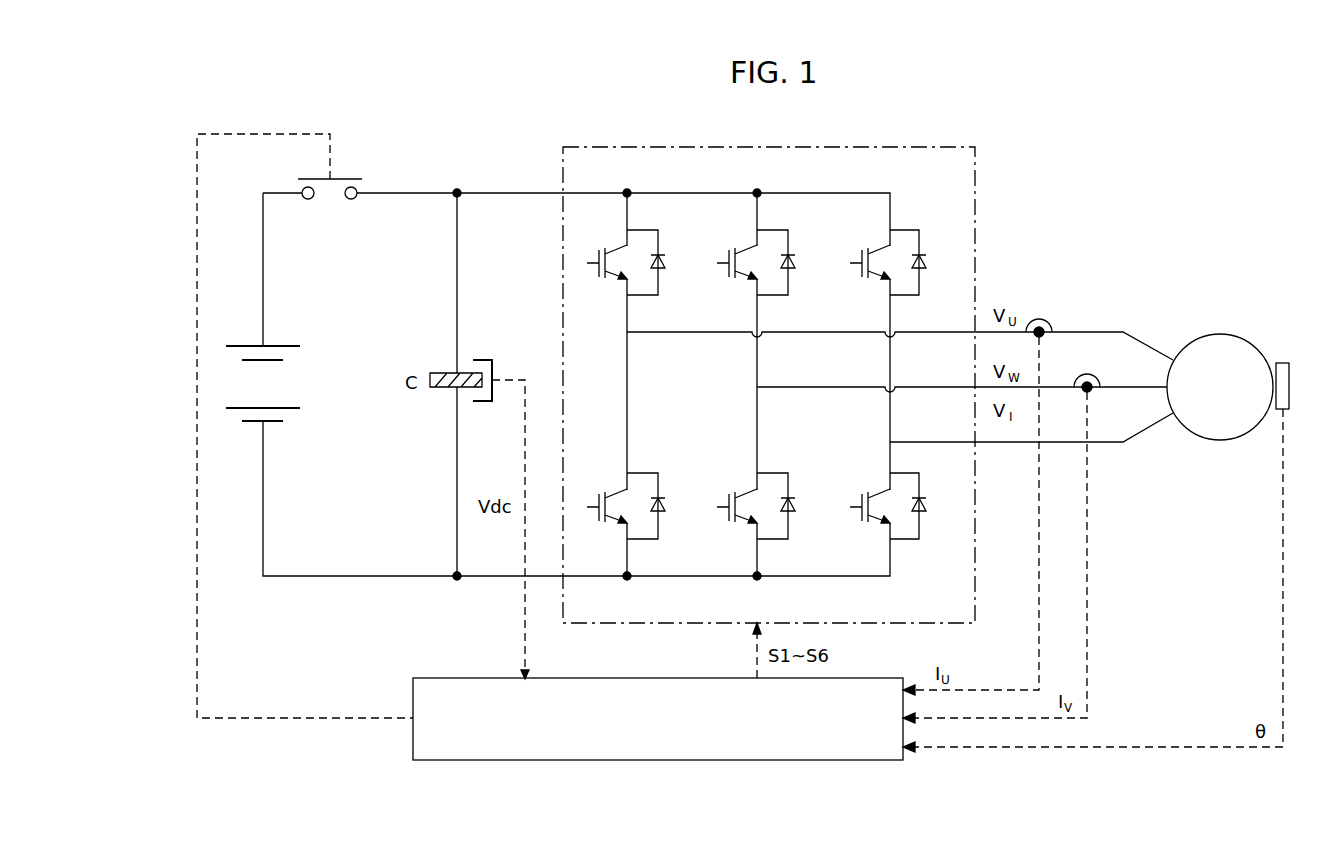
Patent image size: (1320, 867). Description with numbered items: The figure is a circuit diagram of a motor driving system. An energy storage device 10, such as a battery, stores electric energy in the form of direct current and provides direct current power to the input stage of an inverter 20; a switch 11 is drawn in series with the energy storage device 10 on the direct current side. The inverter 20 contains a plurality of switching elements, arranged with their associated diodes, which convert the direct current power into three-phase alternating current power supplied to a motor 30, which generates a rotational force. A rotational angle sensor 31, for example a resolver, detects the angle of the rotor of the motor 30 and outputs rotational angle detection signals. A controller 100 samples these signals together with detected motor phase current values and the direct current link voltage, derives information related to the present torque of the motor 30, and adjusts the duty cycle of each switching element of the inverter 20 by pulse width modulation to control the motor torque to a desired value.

The energy storage device 10 is at (277, 422).
The switch 11 is at (356, 178).
The inverter 20 is at (975, 187).
The motor 30 is at (1220, 333).
The rotational angle sensor 31 is at (1283, 362).
The controller 100 is at (413, 740).